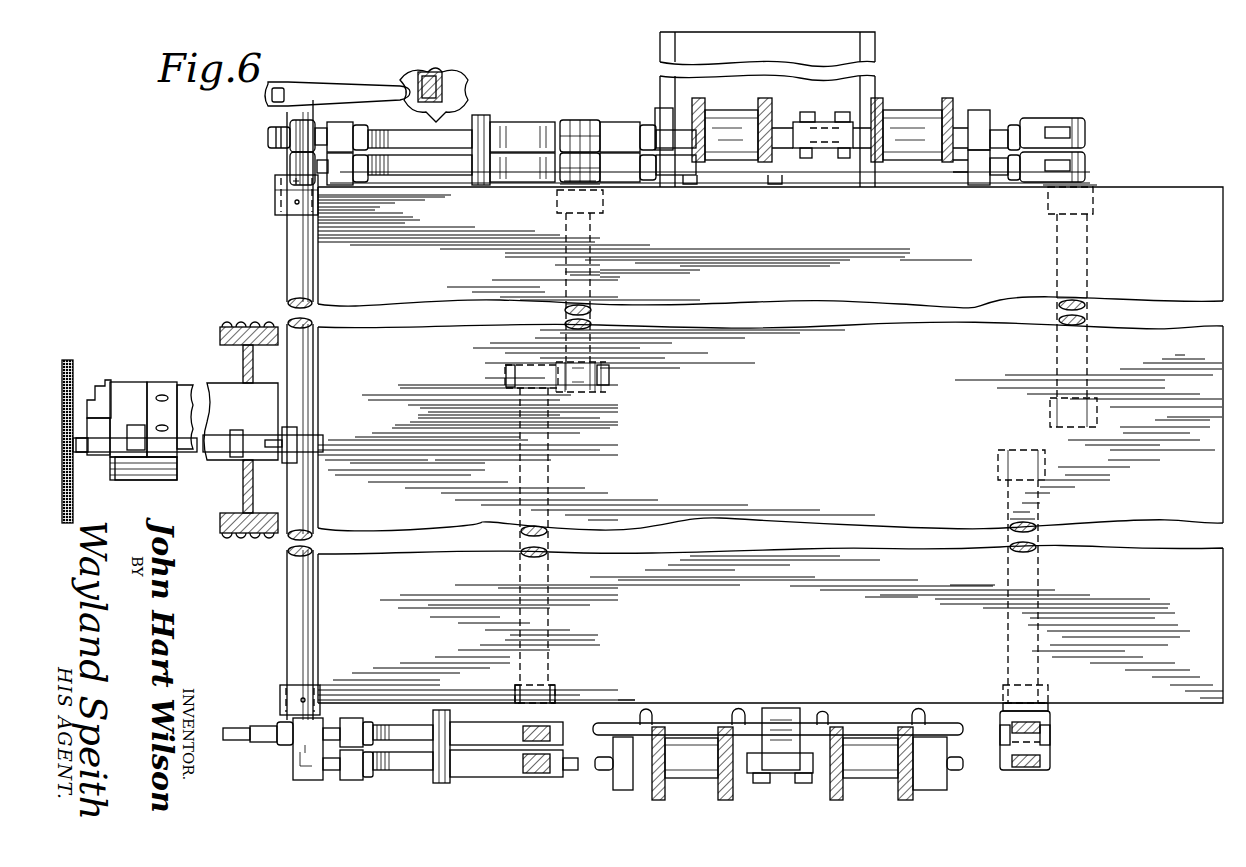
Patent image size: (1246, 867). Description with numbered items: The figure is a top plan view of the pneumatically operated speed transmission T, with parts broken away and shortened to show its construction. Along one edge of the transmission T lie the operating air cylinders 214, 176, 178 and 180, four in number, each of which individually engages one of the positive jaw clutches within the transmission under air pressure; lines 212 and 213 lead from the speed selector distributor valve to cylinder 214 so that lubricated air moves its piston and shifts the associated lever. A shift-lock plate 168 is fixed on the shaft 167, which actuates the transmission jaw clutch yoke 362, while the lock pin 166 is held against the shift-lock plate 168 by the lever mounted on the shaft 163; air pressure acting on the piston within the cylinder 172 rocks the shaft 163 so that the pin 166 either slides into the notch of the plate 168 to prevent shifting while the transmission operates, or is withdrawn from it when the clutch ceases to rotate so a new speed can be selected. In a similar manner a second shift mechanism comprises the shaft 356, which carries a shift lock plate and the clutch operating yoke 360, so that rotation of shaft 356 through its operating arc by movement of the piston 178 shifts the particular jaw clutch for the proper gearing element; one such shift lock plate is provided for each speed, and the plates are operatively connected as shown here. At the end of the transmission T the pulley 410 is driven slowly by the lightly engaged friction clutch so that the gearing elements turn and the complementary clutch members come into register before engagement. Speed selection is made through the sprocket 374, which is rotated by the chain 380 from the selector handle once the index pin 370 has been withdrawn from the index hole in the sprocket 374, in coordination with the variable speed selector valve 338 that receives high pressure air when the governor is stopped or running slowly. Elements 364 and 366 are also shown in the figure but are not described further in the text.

The transmission T is at (1110, 709).
The cylinder 172 is at (415, 72).
The pin 166 is at (497, 128).
The shift-lock plate 168 is at (543, 133).
The air cylinder 214 is at (744, 98).
The air cylinder 176 is at (902, 114).
The line 213 is at (683, 184).
The line 212 is at (770, 177).
The shaft 163 is at (1059, 306).
The shaft 167 is at (592, 311).
The clutch operating yoke 360 is at (505, 373).
The jaw clutch yoke 362 is at (612, 387).
The block 366 is at (1048, 411).
The block 364 is at (998, 463).
The shaft 356 is at (543, 665).
The pulley 410 is at (260, 315).
The sprocket 374 is at (73, 360).
The chain 380 is at (80, 378).
The index pin 370 is at (82, 449).
The variable speed selector valve 338 is at (158, 478).
The piston 178 is at (687, 780).
The air cylinder 180 is at (863, 780).